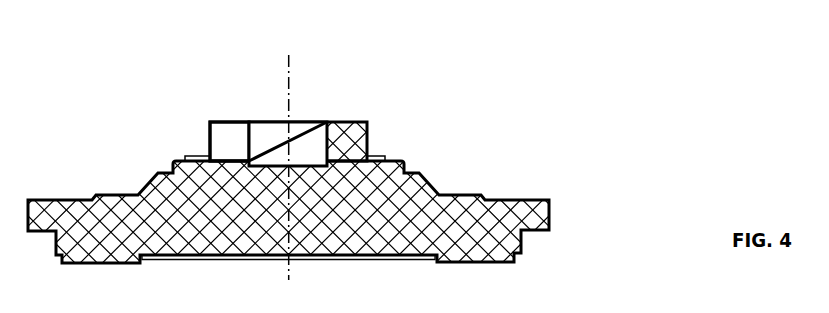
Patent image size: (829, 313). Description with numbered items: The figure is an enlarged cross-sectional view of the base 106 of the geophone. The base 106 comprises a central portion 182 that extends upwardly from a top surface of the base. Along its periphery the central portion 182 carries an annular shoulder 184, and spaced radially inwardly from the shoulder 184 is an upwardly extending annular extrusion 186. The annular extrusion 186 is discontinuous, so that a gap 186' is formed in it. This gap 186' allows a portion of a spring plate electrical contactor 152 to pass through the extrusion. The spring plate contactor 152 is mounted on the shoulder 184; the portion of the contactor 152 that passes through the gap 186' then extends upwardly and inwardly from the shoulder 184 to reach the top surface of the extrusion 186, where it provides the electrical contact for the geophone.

The base 106 is at (566, 88).
The spring plate electrical contactor 152 is at (267, 145).
The central portion 182 is at (402, 202).
The annular shoulder 184 is at (188, 158).
The annular extrusion 186 is at (298, 110).
The gap 186' is at (218, 101).